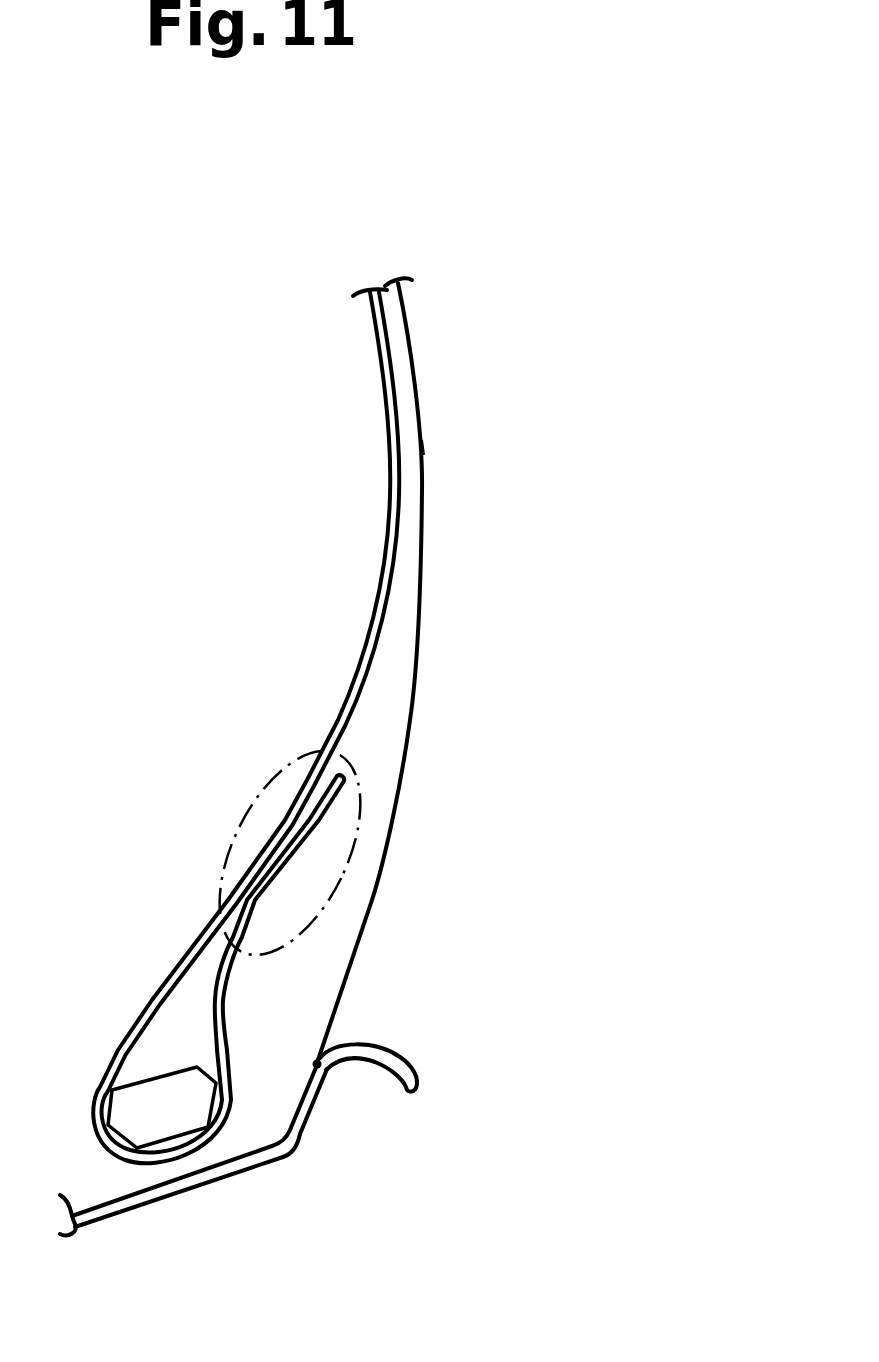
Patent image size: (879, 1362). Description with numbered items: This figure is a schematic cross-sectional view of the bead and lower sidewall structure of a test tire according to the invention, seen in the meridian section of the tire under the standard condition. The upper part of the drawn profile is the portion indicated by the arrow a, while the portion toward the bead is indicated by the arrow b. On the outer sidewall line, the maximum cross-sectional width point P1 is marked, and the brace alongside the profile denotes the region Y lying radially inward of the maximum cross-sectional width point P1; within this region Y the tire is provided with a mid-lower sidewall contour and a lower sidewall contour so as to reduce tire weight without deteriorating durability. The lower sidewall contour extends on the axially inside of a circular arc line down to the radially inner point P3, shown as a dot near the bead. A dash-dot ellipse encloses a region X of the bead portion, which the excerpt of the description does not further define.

The first portion of the strip member a is at (457, 340).
The second portion of the strip member b is at (381, 1000).
The maximum cross-sectional width point P1 is at (428, 446).
The radially inner point P3 is at (327, 1078).
The region X (overlap portion) X is at (262, 788).
The region Y is at (503, 478).